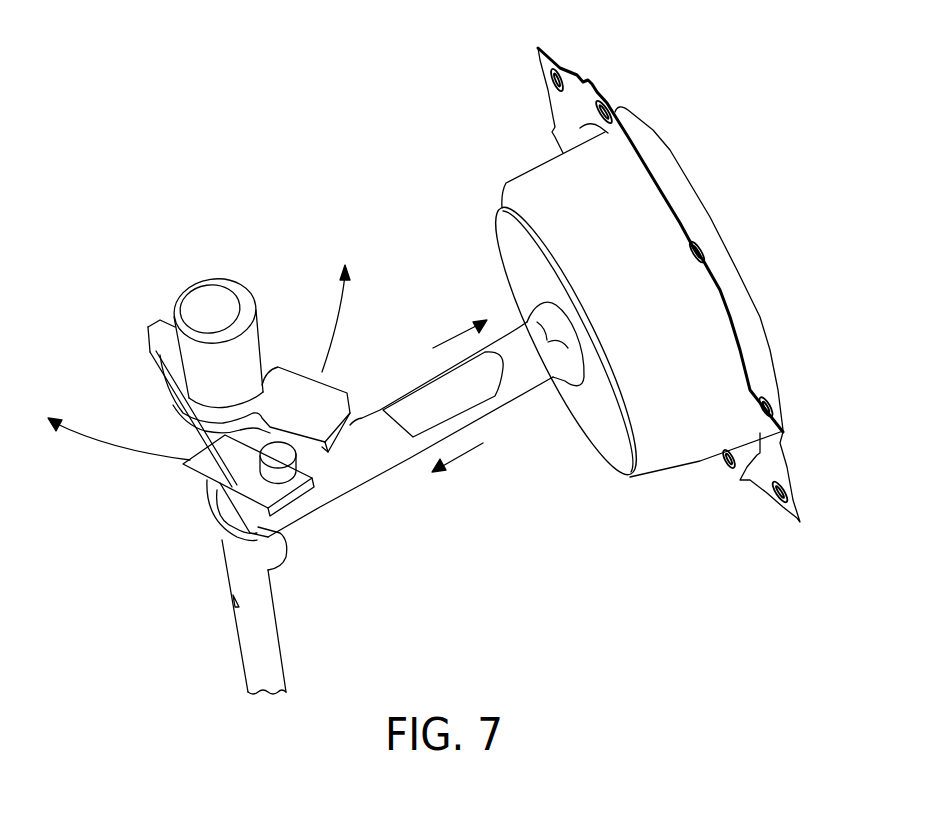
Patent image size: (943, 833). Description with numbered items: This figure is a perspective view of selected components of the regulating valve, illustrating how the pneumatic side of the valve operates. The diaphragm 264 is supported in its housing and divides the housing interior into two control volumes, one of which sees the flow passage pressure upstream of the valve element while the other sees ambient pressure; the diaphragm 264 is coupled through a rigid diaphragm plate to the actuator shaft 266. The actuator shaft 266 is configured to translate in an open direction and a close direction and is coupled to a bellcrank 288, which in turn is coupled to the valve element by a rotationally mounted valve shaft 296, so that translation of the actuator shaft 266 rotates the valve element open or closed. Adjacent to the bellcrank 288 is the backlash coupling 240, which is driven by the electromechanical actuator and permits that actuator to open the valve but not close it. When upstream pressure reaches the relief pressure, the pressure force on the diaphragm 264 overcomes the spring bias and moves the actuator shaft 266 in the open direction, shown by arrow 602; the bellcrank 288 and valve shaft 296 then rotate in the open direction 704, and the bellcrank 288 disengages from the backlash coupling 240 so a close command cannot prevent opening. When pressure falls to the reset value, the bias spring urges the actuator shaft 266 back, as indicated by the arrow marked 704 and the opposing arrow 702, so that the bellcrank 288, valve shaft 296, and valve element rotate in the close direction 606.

The diaphragm 264 is at (552, 53).
The actuator shaft 266 is at (375, 468).
The backlash coupling 240 is at (343, 397).
The bellcrank 288 is at (215, 483).
The valve shaft 296 is at (272, 632).
The arrow 602 is at (97, 451).
The close direction 606 is at (343, 299).
The translation direction arrow 702 is at (460, 453).
The open direction 704 is at (453, 333).